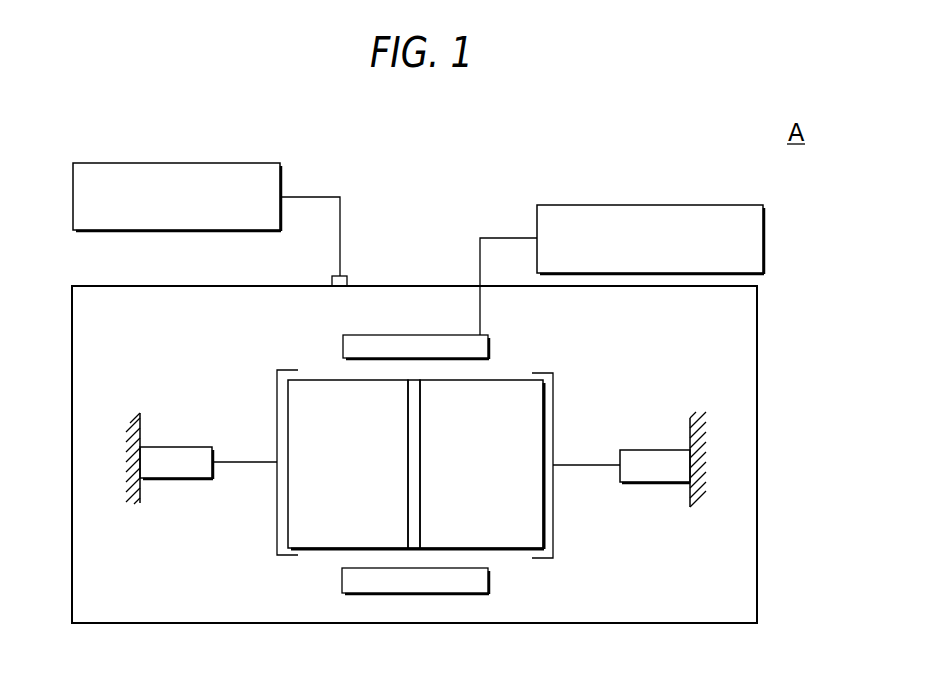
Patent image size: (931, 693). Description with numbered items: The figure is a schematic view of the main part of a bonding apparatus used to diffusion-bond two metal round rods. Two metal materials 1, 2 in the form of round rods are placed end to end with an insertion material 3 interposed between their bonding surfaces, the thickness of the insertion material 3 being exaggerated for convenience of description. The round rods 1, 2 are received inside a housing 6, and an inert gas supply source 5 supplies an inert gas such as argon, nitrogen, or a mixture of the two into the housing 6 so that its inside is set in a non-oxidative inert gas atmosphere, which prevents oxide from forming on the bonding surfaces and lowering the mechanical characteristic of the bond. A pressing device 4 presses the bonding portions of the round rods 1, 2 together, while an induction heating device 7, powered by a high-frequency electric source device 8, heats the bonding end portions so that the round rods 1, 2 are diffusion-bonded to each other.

The metal material 1 is at (313, 548).
The metal material 2 is at (515, 548).
The insertion material 3 is at (413, 548).
The pressing device 4 is at (173, 478).
The inert gas supply source 5 is at (73, 196).
The housing 6 is at (716, 623).
The induction heating device 7 is at (372, 593).
The high-frequency electric source device 8 is at (764, 243).